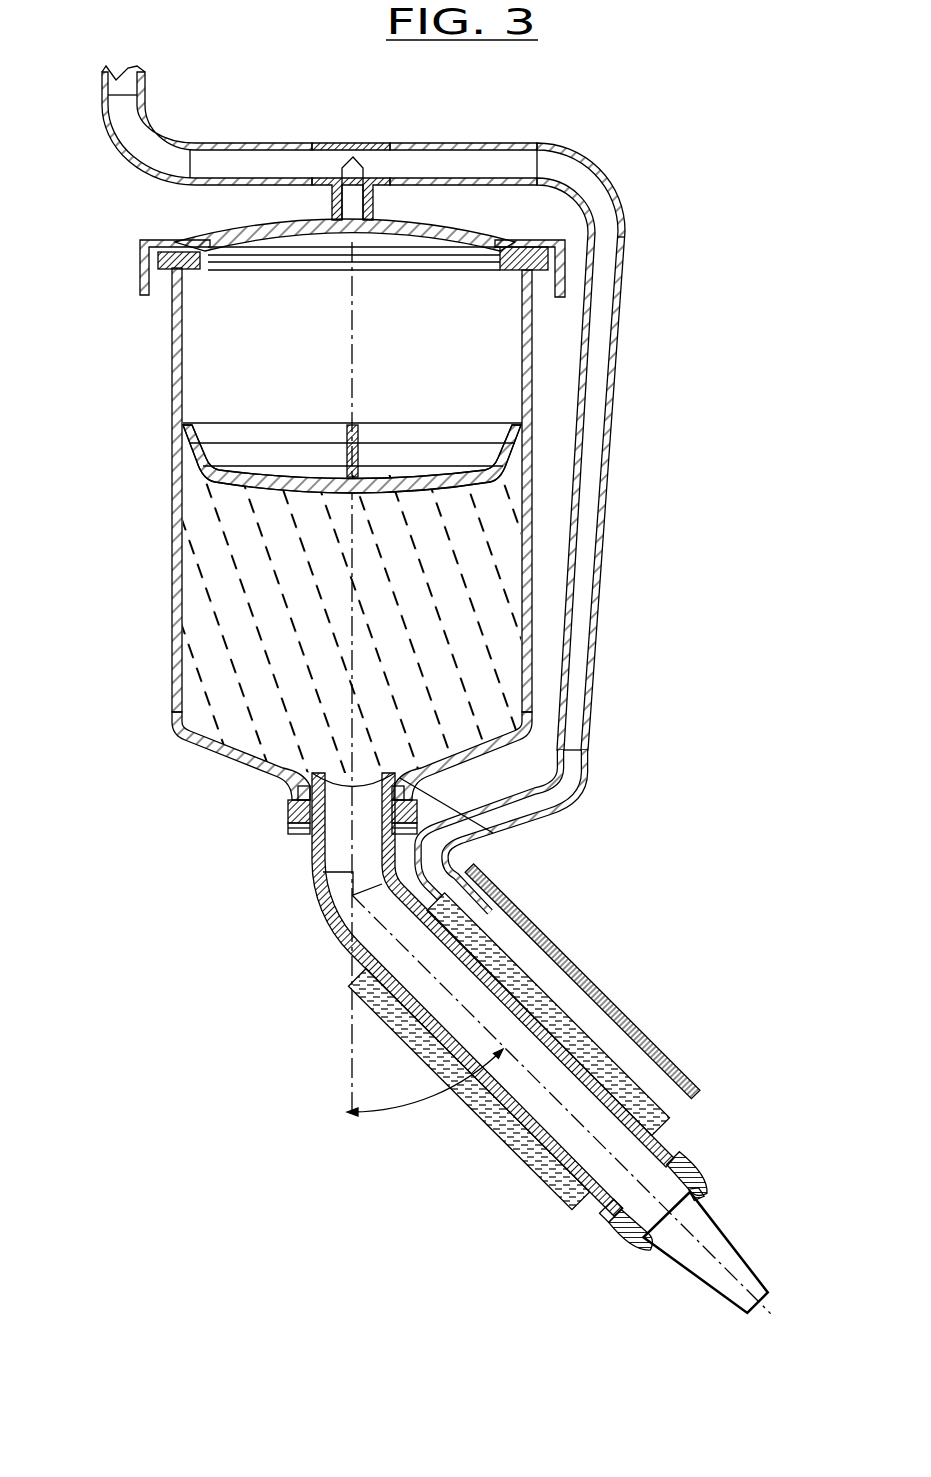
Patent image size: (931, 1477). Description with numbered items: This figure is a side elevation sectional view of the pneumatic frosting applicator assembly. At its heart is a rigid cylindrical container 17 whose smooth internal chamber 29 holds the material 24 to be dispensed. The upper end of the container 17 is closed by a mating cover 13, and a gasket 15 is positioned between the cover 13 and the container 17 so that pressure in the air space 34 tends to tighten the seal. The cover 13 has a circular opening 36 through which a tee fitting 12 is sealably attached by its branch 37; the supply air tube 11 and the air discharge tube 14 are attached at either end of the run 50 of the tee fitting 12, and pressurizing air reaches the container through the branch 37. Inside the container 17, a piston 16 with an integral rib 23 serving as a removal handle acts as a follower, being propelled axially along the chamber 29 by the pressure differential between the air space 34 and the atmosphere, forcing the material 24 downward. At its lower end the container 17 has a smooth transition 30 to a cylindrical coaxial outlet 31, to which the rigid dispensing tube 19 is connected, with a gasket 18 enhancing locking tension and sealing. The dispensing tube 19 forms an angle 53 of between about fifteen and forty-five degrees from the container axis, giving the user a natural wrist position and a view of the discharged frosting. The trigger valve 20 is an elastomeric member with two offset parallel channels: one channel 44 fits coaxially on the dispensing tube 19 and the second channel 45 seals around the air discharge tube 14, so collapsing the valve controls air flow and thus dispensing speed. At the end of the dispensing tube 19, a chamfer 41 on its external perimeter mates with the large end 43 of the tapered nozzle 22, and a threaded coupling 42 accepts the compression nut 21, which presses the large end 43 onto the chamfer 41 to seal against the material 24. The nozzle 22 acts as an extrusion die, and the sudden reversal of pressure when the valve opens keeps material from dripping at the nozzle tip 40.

The supply air tube 11 is at (237, 142).
The tee fitting 12 is at (353, 143).
The cover 13 is at (140, 258).
The air discharge tube 14 is at (613, 190).
The gasket 15 is at (565, 267).
The piston 16 is at (507, 467).
The container 17 is at (530, 588).
The gasket 18 is at (287, 813).
The dispensing tube 19 is at (320, 912).
The trigger valve 20 is at (588, 987).
The compression nut 21 is at (613, 1227).
The nozzle 22 is at (680, 1267).
The rib 23 is at (185, 443).
The material 24 is at (347, 638).
The internal chamber 29 is at (182, 358).
The transition 30 is at (203, 757).
The outlet 31 is at (417, 802).
The air space 34 is at (372, 356).
The circular opening 36 is at (420, 220).
The branch 37 is at (350, 193).
The nozzle tip 40 is at (767, 1297).
The chamfer 41 is at (623, 1233).
The threaded coupling 42 is at (675, 1152).
The large end 43 is at (693, 1190).
The channel 44 is at (372, 997).
The channel 45 is at (600, 1037).
The run 50 is at (338, 162).
The angle 53 is at (423, 1100).